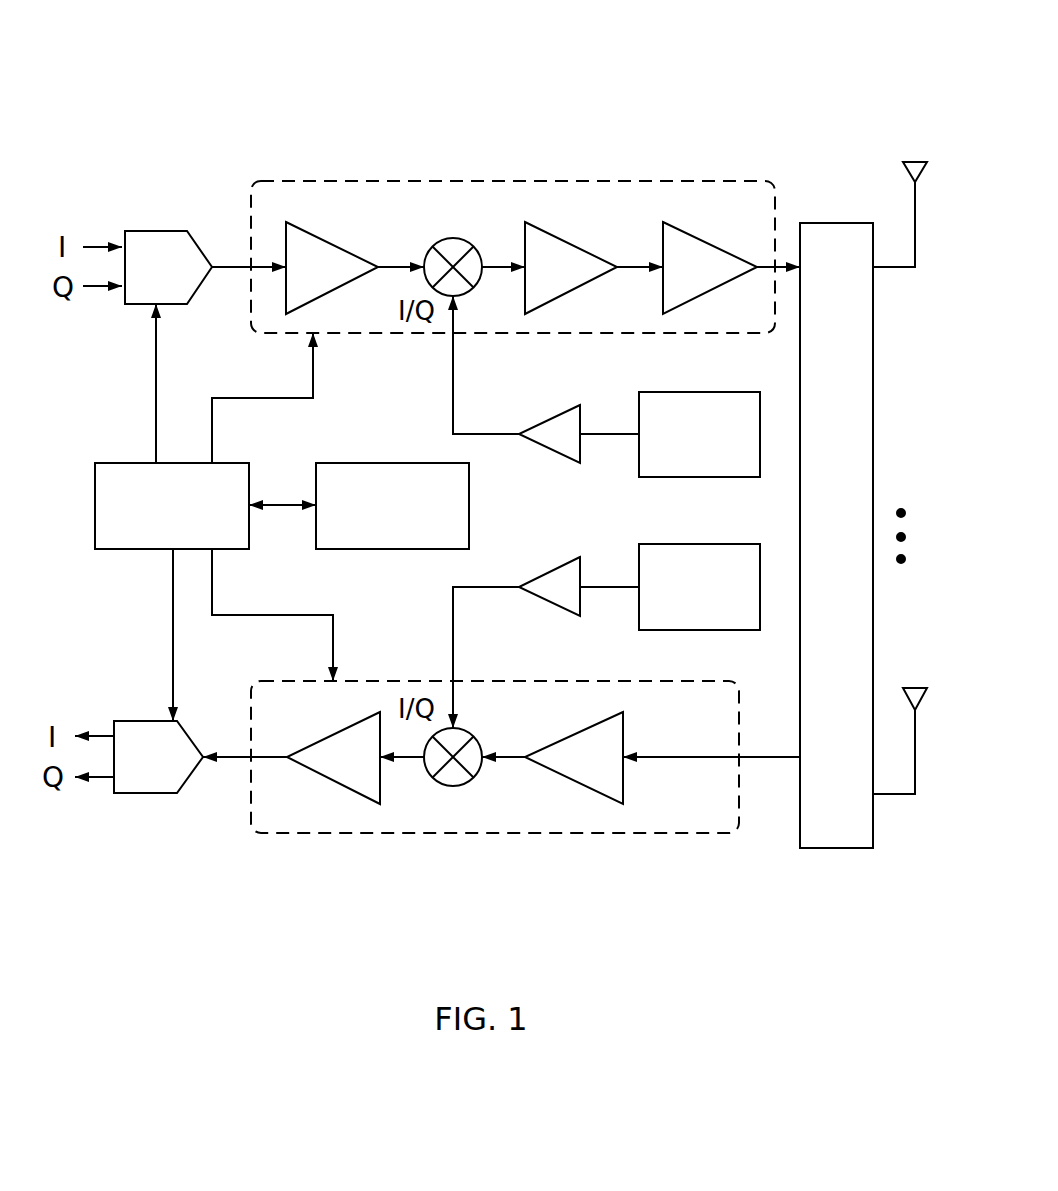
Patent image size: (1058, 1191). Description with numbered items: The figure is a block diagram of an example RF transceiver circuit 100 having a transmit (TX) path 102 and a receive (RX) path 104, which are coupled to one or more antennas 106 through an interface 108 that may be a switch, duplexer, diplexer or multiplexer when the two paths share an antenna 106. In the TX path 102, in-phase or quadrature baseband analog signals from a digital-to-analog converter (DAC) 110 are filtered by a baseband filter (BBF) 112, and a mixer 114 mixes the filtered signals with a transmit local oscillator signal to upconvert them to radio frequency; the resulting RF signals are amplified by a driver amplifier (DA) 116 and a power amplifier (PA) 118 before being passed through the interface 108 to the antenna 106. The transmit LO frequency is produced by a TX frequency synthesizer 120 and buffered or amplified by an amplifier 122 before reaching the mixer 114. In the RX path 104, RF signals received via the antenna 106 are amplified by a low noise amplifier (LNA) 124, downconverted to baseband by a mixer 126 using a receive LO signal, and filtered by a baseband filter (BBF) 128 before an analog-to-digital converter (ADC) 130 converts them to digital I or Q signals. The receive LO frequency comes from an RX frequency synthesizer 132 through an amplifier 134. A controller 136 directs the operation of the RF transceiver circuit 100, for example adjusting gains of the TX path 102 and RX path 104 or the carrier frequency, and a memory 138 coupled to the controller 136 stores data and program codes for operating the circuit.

The RF transceiver circuit 100 is at (222, 42).
The transmit (TX) path 102 is at (289, 181).
The receive (RX) path 104 is at (692, 681).
The antenna 106 is at (915, 162).
The interface 108 is at (838, 223).
The digital-to-analog converter (DAC) 110 is at (155, 231).
The baseband filter (BBF) 112 is at (334, 245).
The mixer 114 is at (456, 240).
The driver amplifier (DA) 116 is at (578, 246).
The power amplifier (PA) 118 is at (705, 246).
The TX frequency synthesizer 120 is at (722, 392).
The amplifier 122 is at (548, 418).
The low noise amplifier (LNA) 124 is at (623, 730).
The mixer 126 is at (467, 733).
The baseband filter (BBF) 128 is at (334, 734).
The analog-to-digital converter (ADC) 130 is at (150, 721).
The RX frequency synthesizer 132 is at (722, 544).
The amplifier 134 is at (548, 571).
The controller 136 is at (125, 463).
The memory 138 is at (362, 463).